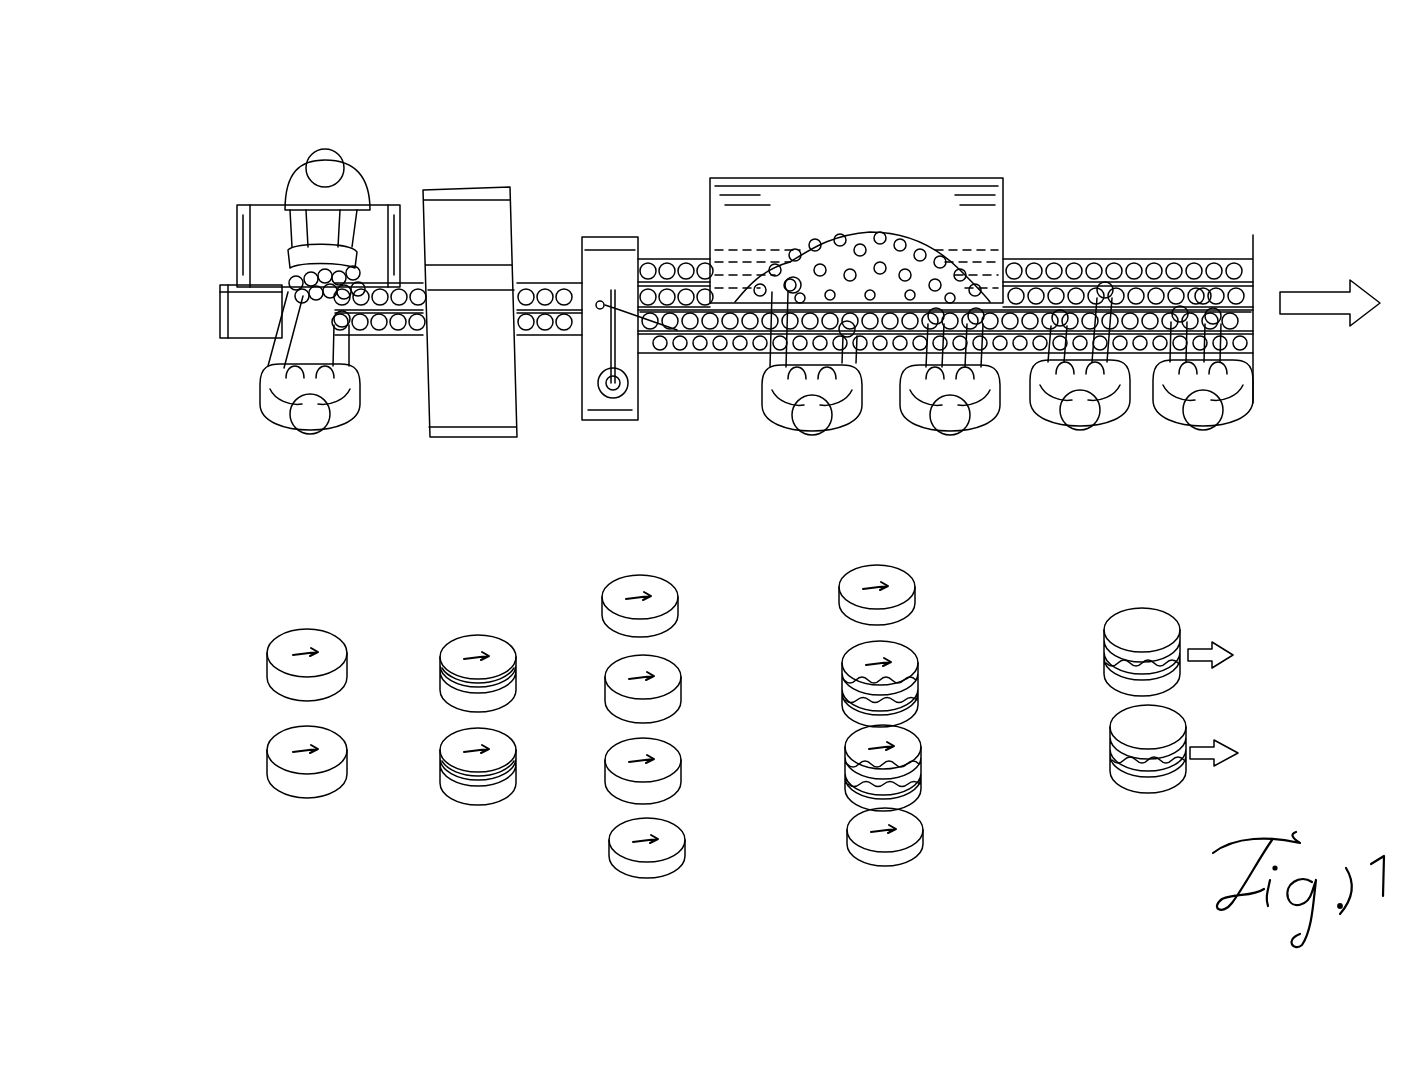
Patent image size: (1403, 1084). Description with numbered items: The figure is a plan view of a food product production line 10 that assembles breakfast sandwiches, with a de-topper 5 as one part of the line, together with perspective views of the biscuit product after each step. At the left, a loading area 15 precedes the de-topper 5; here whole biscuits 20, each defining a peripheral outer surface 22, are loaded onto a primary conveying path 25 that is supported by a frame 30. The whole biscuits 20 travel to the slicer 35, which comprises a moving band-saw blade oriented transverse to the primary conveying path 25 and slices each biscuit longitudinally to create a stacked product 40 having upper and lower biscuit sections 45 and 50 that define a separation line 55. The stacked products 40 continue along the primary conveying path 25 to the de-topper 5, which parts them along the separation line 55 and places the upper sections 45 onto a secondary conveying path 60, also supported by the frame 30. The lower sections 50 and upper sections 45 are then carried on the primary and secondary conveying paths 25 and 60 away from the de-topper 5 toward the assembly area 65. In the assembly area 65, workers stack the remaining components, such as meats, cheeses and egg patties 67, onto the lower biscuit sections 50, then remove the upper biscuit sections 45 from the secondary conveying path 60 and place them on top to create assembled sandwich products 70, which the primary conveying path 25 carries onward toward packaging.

The de-topper 5 is at (601, 235).
The food product production line 10 is at (1010, 127).
The loading area 15 is at (258, 193).
The whole biscuits 20 is at (392, 322).
The peripheral outer surface 22 is at (268, 678).
The primary conveying path 25 is at (402, 298).
The frame 30 is at (212, 300).
The slicer 35 is at (465, 183).
The stacked product 40 is at (555, 330).
The upper biscuit sections 45 is at (700, 265).
The lower biscuit sections 50 is at (672, 292).
The separation line 55 is at (515, 670).
The secondary conveying path 60 is at (695, 262).
The assembly area 65 is at (1017, 225).
The egg patties 67 is at (870, 230).
The assembled sandwich products 70 is at (1203, 293).